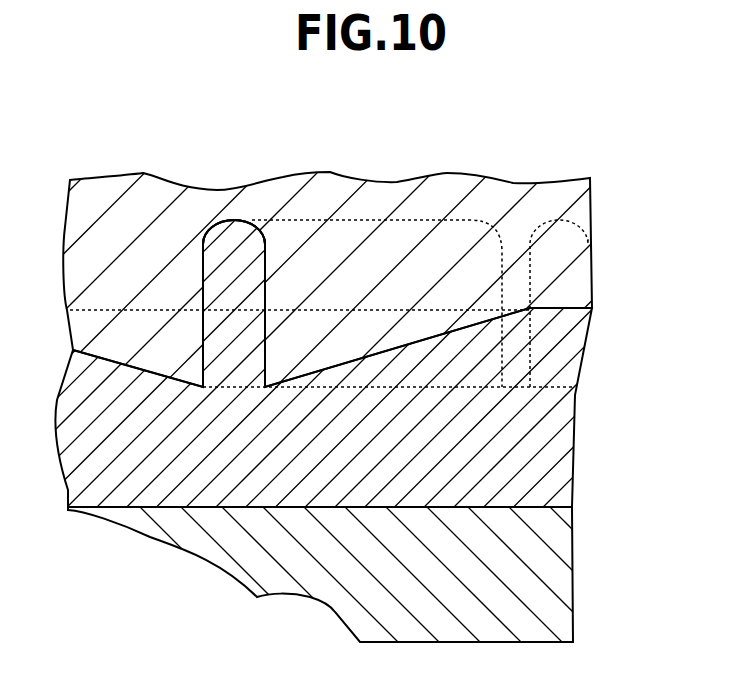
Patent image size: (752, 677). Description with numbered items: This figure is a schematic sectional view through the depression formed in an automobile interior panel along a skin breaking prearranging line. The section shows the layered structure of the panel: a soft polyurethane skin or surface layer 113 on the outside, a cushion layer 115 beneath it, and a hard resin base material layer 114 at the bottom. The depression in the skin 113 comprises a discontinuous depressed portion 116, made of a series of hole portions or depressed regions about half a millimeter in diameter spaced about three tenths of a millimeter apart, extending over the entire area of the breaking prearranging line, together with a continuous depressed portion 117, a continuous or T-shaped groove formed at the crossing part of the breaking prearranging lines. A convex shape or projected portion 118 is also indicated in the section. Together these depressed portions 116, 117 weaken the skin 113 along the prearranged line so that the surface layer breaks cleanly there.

The soft polyurethane skin 113 is at (575, 266).
The hard resin base material layer 114 is at (547, 561).
The cushion layer 115 is at (558, 413).
The discontinuous depressed portion 116 is at (560, 233).
The continuous depressed portion 117 is at (235, 228).
The projected portion 118 is at (122, 330).